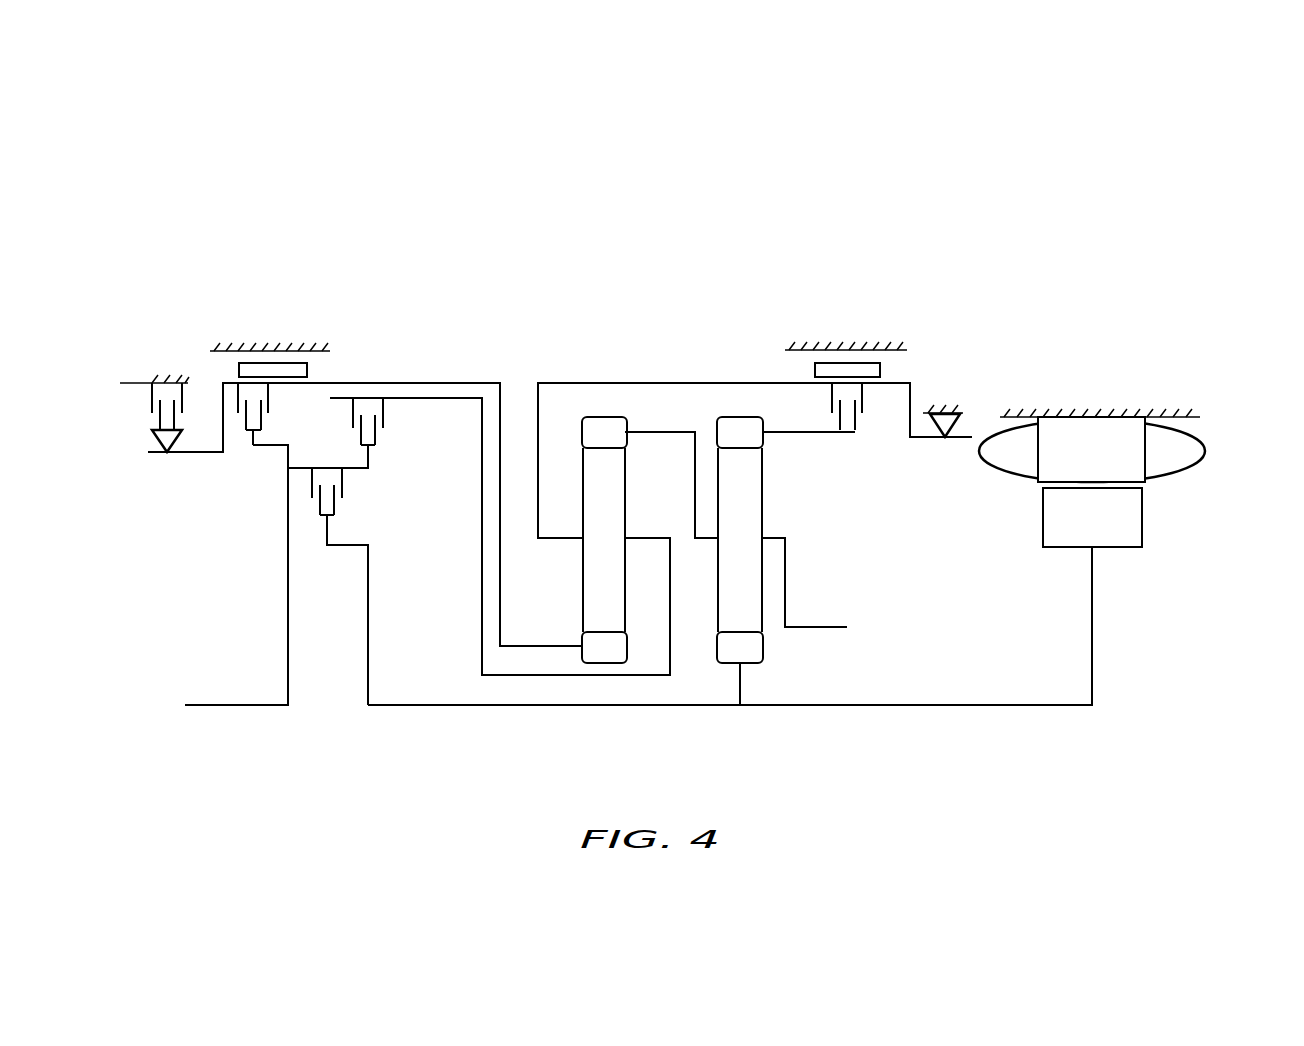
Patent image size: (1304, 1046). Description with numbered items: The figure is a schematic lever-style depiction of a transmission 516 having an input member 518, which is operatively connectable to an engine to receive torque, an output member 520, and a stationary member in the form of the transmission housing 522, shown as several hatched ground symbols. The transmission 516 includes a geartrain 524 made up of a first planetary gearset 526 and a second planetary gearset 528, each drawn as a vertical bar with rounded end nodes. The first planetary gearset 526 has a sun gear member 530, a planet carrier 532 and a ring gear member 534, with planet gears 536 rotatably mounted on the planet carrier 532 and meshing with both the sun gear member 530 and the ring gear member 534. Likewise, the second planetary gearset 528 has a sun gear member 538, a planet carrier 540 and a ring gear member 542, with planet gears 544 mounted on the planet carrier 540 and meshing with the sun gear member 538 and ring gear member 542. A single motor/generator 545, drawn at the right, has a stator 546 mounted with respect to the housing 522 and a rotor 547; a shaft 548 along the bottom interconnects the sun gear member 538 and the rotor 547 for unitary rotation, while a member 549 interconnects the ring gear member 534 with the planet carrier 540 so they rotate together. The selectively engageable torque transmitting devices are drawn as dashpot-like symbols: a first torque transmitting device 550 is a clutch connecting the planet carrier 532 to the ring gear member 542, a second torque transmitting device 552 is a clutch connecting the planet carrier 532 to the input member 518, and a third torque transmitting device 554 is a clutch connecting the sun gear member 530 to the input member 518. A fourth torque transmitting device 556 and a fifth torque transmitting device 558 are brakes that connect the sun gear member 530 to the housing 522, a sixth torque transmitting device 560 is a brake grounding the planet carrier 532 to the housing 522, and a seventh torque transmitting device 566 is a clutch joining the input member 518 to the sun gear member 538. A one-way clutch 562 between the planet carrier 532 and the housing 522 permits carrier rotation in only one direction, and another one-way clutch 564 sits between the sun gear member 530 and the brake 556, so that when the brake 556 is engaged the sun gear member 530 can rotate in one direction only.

The transmission 516 is at (681, 296).
The input member 518 is at (240, 704).
The output member 520 is at (826, 626).
The transmission housing 522 is at (332, 352).
The geartrain 524 is at (836, 656).
The first planetary gearset 526 is at (597, 497).
The second planetary gearset 528 is at (806, 561).
The sun gear member 530 is at (580, 641).
The planet carrier 532 is at (572, 540).
The ring gear member 534 is at (628, 424).
The planet gears 536 is at (628, 488).
The sun gear member 538 is at (764, 648).
The planet carrier 540 is at (707, 540).
The ring gear member 542 is at (765, 437).
The planet gears 544 is at (765, 508).
The motor/generator 545 is at (1124, 504).
The stator 546 is at (1184, 465).
The rotor 547 is at (1145, 517).
The shaft 548 is at (972, 706).
The member 549 is at (690, 440).
The first torque transmitting device 550 is at (868, 430).
The second torque transmitting device 552 is at (394, 436).
The third torque transmitting device 554 is at (243, 442).
The fourth torque transmitting device 556 is at (133, 418).
The fifth torque transmitting device 558 is at (330, 375).
The sixth torque transmitting device 560 is at (798, 368).
The one-way clutch 562 is at (970, 450).
The one-way clutch 564 is at (144, 450).
The seventh torque transmitting device 566 is at (354, 492).